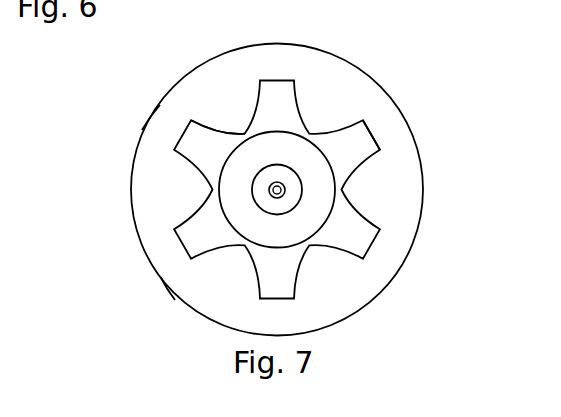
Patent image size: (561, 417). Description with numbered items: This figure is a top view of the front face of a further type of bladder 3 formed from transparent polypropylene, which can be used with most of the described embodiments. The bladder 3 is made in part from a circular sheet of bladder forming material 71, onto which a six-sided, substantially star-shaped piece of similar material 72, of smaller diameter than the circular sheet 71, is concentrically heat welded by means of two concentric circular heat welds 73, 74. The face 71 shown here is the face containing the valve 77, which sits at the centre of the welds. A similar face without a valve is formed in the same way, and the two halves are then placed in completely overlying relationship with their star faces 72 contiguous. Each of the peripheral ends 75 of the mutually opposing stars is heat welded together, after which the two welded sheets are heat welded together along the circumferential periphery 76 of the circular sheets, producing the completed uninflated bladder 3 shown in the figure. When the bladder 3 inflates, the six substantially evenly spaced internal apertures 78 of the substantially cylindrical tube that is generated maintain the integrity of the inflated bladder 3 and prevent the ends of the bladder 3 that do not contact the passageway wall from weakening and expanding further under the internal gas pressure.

The bladder 3 is at (131, 193).
The circular sheet of bladder forming material 71 is at (157, 148).
The star shaped piece 72 is at (278, 90).
The concentric circular heat weld 73 is at (334, 214).
The concentric circular heat weld 74 is at (290, 165).
The peripheral end 75 is at (376, 137).
The circumferential periphery 76 is at (160, 277).
The valve 77 is at (277, 190).
The aperture 78 is at (235, 122).